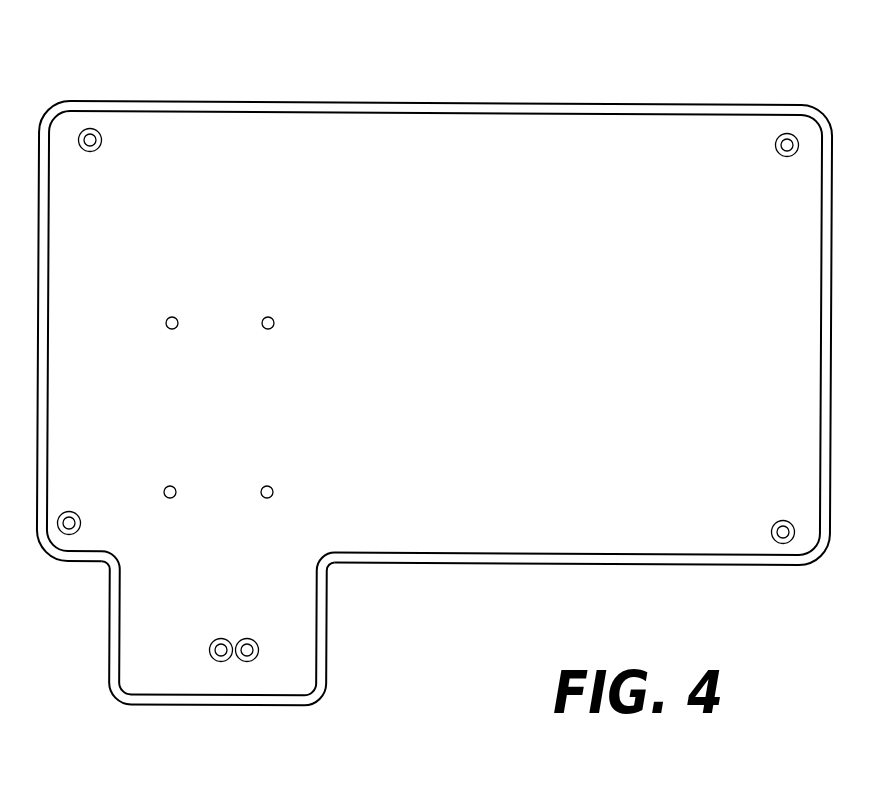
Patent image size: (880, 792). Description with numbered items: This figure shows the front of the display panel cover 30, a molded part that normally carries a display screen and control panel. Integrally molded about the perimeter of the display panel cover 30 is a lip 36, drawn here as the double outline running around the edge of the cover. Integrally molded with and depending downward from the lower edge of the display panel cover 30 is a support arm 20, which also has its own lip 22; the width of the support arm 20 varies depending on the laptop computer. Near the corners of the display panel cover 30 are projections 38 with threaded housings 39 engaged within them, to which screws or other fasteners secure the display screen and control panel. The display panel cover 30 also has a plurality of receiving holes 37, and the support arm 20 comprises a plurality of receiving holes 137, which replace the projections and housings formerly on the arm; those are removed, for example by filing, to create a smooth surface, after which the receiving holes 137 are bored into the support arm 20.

The display panel cover 30 is at (434, 362).
The lip 36 is at (520, 103).
The support arm 20 is at (332, 619).
The lip 22 is at (322, 641).
The projections 38 is at (106, 137).
The threaded housings 39 is at (92, 147).
The receiving holes 37 is at (275, 320).
The receiving holes 137 is at (233, 638).